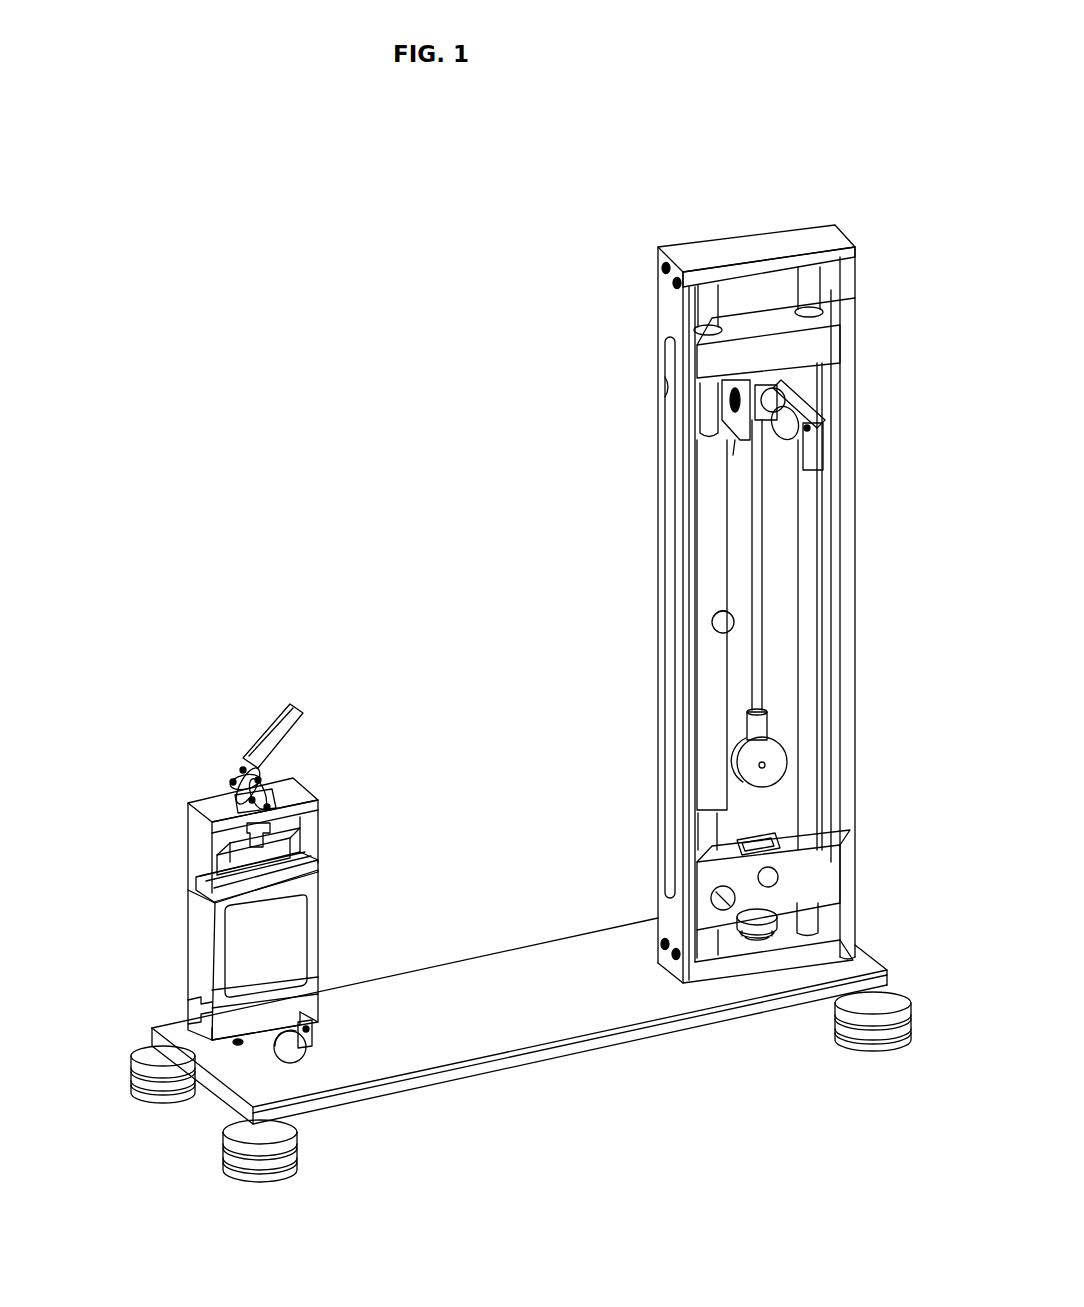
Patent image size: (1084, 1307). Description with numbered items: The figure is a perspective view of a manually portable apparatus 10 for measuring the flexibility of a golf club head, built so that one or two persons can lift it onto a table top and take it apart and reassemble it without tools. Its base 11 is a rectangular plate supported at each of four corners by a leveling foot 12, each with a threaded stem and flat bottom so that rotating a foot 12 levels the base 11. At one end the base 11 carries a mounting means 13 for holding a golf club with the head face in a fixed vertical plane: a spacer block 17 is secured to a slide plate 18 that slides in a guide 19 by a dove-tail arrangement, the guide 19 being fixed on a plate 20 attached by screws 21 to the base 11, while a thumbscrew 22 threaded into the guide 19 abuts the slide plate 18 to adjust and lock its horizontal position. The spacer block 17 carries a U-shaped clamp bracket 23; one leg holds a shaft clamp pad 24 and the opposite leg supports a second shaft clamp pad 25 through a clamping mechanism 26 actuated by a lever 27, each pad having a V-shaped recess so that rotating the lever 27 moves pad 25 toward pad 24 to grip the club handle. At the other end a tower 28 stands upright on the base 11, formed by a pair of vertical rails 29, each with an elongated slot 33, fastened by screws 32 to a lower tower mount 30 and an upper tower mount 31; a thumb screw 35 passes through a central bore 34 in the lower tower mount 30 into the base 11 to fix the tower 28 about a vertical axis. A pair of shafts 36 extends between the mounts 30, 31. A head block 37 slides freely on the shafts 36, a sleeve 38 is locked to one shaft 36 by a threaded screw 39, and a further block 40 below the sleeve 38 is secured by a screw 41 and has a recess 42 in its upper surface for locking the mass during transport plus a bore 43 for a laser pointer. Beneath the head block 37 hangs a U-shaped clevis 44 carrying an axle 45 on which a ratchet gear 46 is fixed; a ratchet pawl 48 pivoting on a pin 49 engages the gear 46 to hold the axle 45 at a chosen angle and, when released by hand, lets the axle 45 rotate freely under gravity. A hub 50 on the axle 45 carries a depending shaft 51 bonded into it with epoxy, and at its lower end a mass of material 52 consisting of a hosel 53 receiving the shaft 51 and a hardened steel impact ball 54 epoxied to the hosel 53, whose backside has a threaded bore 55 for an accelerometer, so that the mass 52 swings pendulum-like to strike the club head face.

The apparatus 10 is at (288, 543).
The base 11 is at (472, 955).
The leveling foot 12 is at (873, 1030).
The mounting means 13 is at (155, 908).
The spacer block 17 is at (195, 952).
The slide plate 18 is at (186, 1004).
The guide 19 is at (318, 1004).
The plate 20 is at (310, 1044).
The screws 21 is at (308, 1030).
The thumbscrew 22 is at (290, 1058).
The clamp bracket 23 is at (188, 812).
The shaft clamp pad 24 is at (318, 862).
The second shaft clamp pad 25 is at (290, 835).
The clamping mechanism 26 is at (232, 765).
The lever 27 is at (300, 712).
The tower 28 is at (545, 375).
The tower rails 29 is at (845, 300).
The lower tower mount 30 is at (702, 975).
The upper tower mount 31 is at (742, 245).
The screws 32 is at (672, 283).
The elongated slot 33 is at (666, 390).
The central bore 34 is at (757, 942).
The thumb screw 35 is at (758, 913).
The shafts 36 is at (812, 718).
The head block 37 is at (830, 345).
The sleeve 38 is at (712, 543).
The threaded screw 39 is at (712, 618).
The block 40 is at (836, 865).
The screw 41 is at (712, 896).
The recess 42 is at (760, 842).
The bore 43 is at (776, 874).
The clevis 44 is at (738, 459).
The axle 45 is at (733, 405).
The ratchet gear 46 is at (786, 432).
The ratchet pawl 48 is at (823, 450).
The pin 49 is at (822, 420).
The hub 50 is at (762, 392).
The shaft 51 is at (762, 570).
The mass of material 52 is at (780, 712).
The hosel 53 is at (748, 718).
The impact ball 54 is at (762, 775).
The threaded bore 55 is at (775, 755).